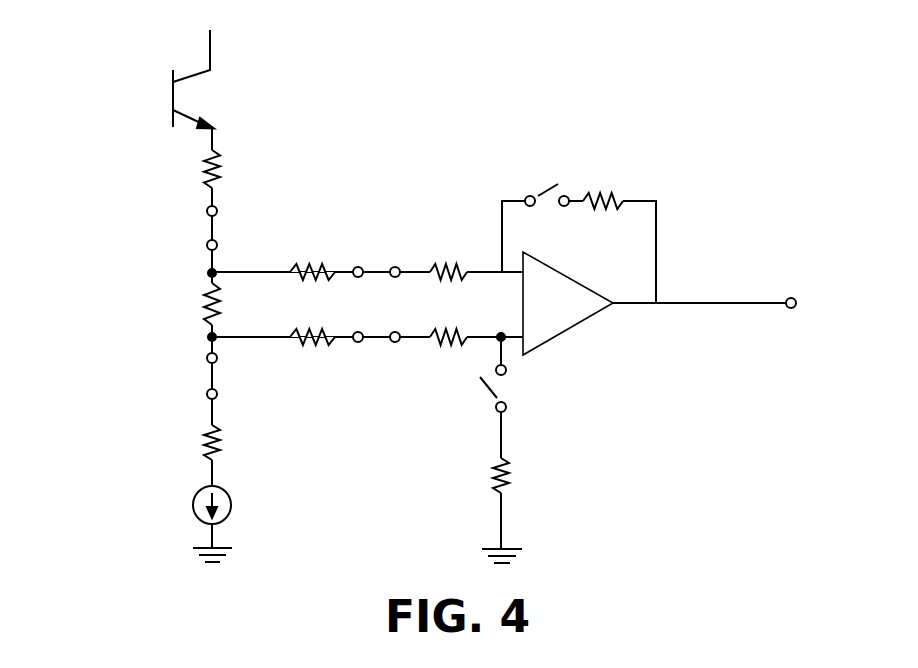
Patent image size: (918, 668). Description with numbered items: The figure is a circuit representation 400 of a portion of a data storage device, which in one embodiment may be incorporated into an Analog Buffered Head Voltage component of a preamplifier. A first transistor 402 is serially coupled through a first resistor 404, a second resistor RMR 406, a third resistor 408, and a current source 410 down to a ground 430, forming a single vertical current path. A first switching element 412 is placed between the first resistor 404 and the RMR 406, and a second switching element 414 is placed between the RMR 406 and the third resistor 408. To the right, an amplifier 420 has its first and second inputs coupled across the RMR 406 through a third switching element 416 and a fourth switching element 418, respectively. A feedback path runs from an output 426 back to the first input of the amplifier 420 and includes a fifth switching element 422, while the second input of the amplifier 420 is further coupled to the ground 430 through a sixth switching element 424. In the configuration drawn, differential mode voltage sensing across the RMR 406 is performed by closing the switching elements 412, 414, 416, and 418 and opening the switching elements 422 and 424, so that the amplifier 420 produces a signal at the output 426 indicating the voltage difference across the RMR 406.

The circuit representation 400 is at (94, 90).
The first transistor 402 is at (168, 80).
The first resistor 404 is at (222, 165).
The second resistor RMR 406 is at (202, 300).
The third resistor 408 is at (218, 430).
The current source 410 is at (196, 510).
The first switching element 412 is at (224, 228).
The second switching element 414 is at (224, 375).
The third switching element 416 is at (378, 262).
The fourth switching element 418 is at (378, 348).
The amplifier 420 is at (541, 330).
The fifth switching element 422 is at (560, 186).
The sixth switching element 424 is at (515, 394).
The output 426 is at (793, 292).
The ground 430 is at (196, 548).